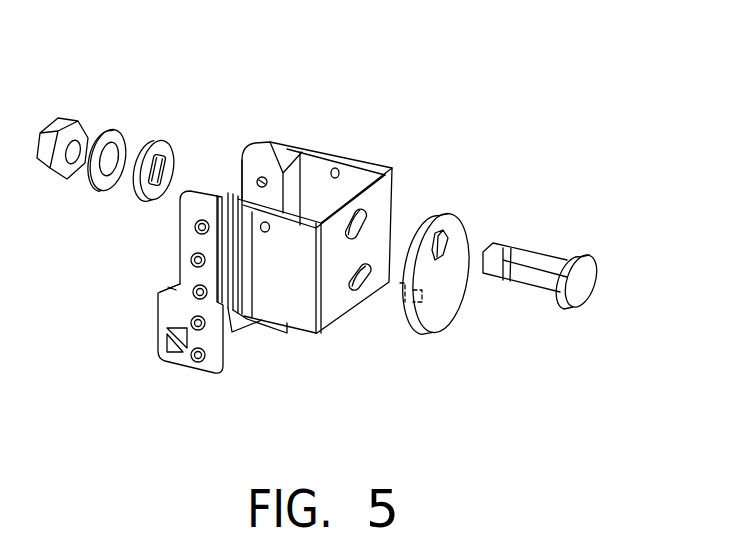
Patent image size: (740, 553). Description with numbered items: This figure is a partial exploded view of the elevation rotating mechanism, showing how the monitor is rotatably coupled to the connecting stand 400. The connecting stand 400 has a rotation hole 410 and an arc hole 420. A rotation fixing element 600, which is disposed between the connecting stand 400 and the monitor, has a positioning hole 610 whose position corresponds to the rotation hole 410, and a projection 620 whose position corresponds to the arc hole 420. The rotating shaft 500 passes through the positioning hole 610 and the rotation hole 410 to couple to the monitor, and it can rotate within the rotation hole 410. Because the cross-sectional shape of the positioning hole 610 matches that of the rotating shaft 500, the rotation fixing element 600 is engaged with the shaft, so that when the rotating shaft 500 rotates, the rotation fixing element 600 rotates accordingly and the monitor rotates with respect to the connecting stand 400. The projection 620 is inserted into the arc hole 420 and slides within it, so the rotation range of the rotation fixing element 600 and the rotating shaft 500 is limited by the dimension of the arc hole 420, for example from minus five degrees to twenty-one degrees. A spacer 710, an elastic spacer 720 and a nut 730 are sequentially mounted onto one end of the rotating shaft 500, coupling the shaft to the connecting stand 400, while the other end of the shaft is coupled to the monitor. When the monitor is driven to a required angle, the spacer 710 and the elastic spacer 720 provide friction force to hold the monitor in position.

The connecting stand 400 is at (373, 163).
The rotation hole 410 is at (362, 222).
The arc hole 420 is at (357, 281).
The rotating shaft 500 is at (540, 270).
The rotation fixing element 600 is at (447, 296).
The positioning hole 610 is at (447, 239).
The projection 620 is at (404, 290).
The spacer 710 is at (173, 147).
The elastic spacer 720 is at (127, 134).
The nut 730 is at (70, 118).